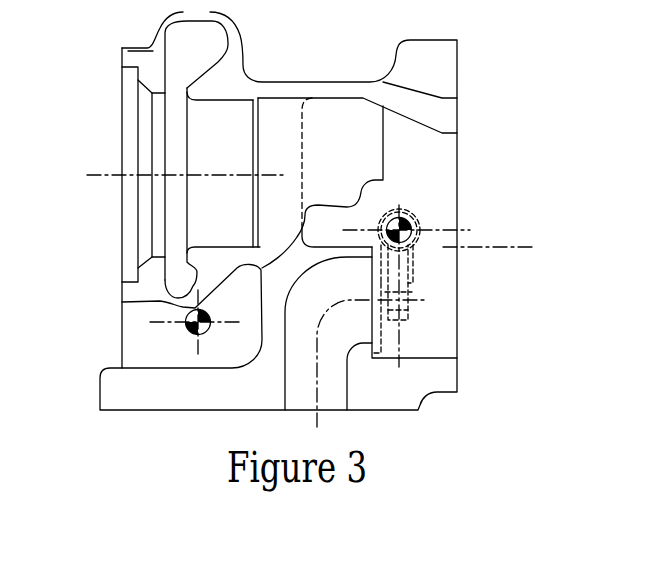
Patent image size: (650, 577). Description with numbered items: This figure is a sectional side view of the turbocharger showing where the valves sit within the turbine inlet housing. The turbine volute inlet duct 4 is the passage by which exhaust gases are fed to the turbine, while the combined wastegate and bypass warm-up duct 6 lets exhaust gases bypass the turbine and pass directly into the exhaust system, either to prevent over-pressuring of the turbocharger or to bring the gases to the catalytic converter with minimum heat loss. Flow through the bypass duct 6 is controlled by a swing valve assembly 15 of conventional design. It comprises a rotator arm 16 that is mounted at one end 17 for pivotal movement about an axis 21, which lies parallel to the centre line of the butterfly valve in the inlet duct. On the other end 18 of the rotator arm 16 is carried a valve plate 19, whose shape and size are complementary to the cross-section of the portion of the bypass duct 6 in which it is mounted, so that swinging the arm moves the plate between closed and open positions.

The turbine volute inlet duct 4 is at (150, 342).
The combined wastegate and bypass warm-up duct 6 is at (333, 372).
The swing valve assembly 15 is at (413, 275).
The rotator arm 16 is at (403, 261).
The one end of the rotator arm 17 is at (413, 231).
The other end of the rotator arm 18 is at (407, 313).
The valve plate 19 is at (377, 318).
The axis 21 is at (413, 218).